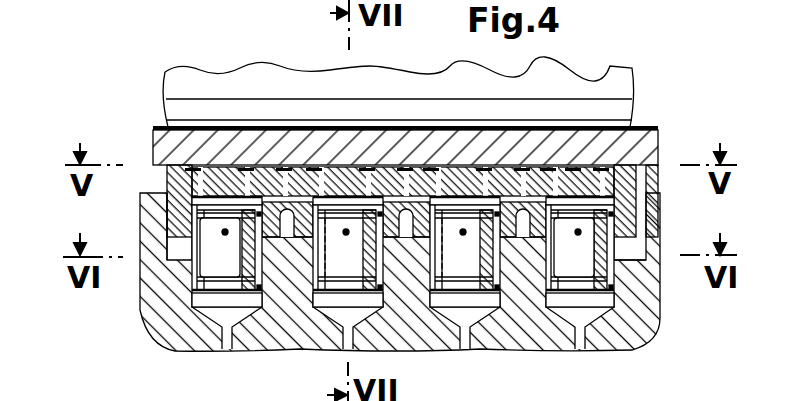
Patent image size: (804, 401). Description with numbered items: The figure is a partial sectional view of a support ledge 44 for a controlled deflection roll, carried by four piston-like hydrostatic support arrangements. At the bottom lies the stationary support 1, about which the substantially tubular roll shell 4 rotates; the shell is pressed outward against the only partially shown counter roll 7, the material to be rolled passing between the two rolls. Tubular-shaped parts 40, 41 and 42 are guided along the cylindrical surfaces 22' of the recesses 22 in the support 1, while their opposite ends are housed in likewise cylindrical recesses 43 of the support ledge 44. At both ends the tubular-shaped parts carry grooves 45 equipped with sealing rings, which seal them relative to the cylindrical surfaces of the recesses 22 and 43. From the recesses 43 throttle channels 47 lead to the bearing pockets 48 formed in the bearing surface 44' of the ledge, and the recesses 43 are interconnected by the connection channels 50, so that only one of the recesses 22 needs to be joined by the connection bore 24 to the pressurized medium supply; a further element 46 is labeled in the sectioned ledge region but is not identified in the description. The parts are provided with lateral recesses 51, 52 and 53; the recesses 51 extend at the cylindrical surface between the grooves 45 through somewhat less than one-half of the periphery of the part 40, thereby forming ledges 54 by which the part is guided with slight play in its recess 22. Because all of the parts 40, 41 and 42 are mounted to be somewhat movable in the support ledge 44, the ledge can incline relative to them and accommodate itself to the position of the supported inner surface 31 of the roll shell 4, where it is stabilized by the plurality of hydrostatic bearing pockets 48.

The stationary support 1 is at (637, 330).
The roll shell 4 is at (643, 147).
The counter roll 7 is at (622, 88).
The recesses 22 is at (395, 343).
The cylindrical surfaces 22' is at (99, 322).
The connection bore 24 is at (343, 353).
The supported inner surface 31 is at (573, 172).
The tubular-shaped part 40 is at (212, 293).
The tubular-shaped part 41 is at (452, 296).
The tubular-shaped part 42 is at (337, 295).
The cylindrical recesses 43 is at (200, 205).
The support ledge 44 is at (408, 168).
The bearing surface 44' is at (354, 134).
The grooves 45 is at (606, 298).
The cylinder 46 is at (462, 230).
The throttle channels 47 is at (212, 186).
The bearing pockets 48 is at (197, 190).
The connection channels 50 is at (283, 203).
The lateral recesses 51 is at (212, 260).
The lateral recesses 52 is at (465, 263).
The lateral recesses 53 is at (340, 225).
The ledges 54 is at (227, 270).